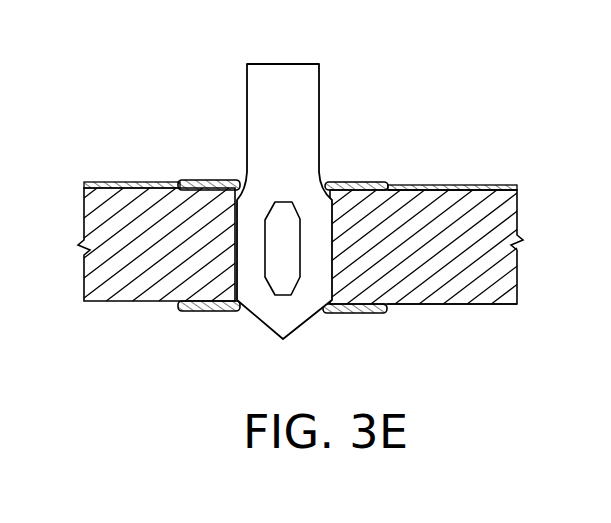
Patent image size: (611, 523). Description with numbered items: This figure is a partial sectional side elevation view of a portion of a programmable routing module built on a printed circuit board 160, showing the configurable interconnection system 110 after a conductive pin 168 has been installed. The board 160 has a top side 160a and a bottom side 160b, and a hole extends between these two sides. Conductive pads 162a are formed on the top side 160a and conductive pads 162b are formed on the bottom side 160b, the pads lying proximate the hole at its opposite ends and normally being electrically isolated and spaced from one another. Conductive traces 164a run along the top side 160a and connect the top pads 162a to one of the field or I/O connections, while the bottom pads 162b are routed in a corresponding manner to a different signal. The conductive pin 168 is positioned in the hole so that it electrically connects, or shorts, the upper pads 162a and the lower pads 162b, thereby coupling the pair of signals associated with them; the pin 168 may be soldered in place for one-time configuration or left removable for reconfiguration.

The interconnection system 110 is at (114, 111).
The printed circuit board 160 is at (83, 237).
The top side of the board 160a is at (441, 167).
The bottom side of the board 160b is at (469, 322).
The conductive pads on top side 162a is at (198, 181).
The conductive pads on bottom side 162b is at (205, 312).
The conductive traces on top side 164a is at (108, 182).
The conductive pin 168 is at (247, 87).